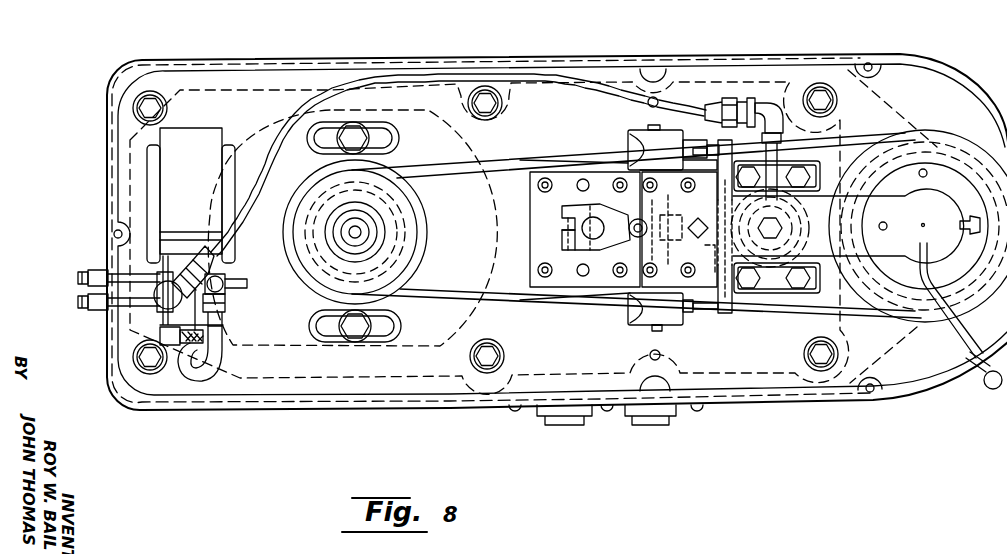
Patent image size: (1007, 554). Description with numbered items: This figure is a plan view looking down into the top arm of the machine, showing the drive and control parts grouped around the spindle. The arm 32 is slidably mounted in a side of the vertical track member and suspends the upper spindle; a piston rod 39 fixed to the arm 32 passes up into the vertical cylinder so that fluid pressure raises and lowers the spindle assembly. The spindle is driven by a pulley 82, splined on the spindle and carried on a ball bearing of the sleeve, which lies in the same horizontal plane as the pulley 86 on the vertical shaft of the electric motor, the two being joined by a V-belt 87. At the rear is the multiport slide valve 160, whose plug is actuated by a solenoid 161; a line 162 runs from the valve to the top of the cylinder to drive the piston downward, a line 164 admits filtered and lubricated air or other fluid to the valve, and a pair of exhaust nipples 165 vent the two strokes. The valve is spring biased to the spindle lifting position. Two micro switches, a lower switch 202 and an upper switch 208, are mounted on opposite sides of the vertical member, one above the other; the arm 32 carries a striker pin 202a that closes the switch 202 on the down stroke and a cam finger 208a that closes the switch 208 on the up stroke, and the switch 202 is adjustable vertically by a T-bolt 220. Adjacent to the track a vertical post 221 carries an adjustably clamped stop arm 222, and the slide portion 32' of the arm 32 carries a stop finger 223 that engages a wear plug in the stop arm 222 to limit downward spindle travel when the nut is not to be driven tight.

The arm 32 is at (867, 279).
The vertical or slide portion of the arm 32' is at (654, 229).
The piston rod 39 is at (777, 227).
The pulley 82 is at (995, 160).
The pulley 86 is at (410, 236).
The V-belt 87 is at (446, 172).
The multiport slide valve 160 is at (182, 317).
The solenoid 161 is at (167, 154).
The line 162 is at (273, 165).
The line 164 is at (257, 285).
The exhaust nipples 165 is at (83, 312).
The switch 202 is at (630, 315).
The striker pin 202a is at (731, 314).
The switch 208 is at (632, 146).
The cam finger 208a is at (758, 112).
The T-bolt 220 is at (660, 300).
The vertical post 221 is at (568, 215).
The stop arm 222 is at (566, 243).
The stop finger 223 is at (595, 227).